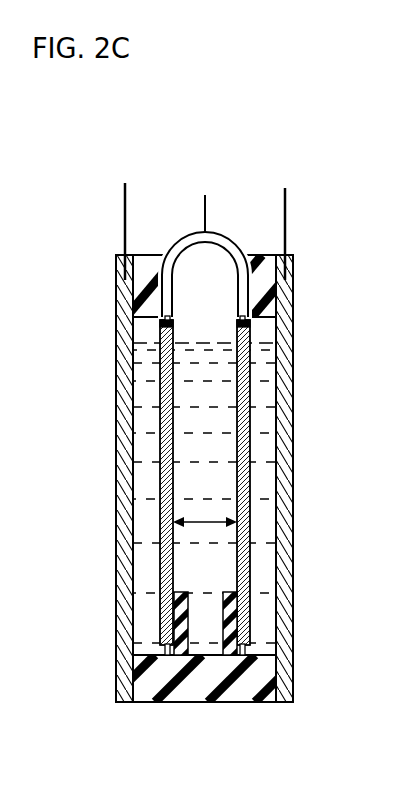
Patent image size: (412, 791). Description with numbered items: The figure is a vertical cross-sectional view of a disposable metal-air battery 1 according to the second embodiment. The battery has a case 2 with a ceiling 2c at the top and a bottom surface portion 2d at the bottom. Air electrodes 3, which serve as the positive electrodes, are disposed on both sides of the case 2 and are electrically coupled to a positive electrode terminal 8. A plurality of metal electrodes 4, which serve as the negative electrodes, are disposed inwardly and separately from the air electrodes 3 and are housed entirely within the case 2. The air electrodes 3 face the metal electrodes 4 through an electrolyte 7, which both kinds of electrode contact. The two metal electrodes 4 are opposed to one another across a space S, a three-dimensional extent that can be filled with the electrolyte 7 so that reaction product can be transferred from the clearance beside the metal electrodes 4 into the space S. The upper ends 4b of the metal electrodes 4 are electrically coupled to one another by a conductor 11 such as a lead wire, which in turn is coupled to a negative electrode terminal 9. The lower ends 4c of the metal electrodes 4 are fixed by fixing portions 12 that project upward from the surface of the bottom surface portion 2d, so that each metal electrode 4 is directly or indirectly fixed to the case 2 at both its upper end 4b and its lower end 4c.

The metal-air battery 1 is at (263, 182).
The case 2 is at (146, 262).
The ceiling 2c is at (265, 258).
The bottom surface portion 2d is at (233, 690).
The air electrode 3 is at (120, 457).
The metal electrode 4 is at (163, 396).
The upper end 4b is at (166, 325).
The lower end 4c is at (166, 648).
The electrolyte 7 is at (144, 516).
The positive electrode terminal 8 is at (125, 226).
The negative electrode terminal 9 is at (207, 202).
The conductor 11 is at (184, 233).
The fixing portion 12 is at (222, 598).
The space S is at (205, 524).